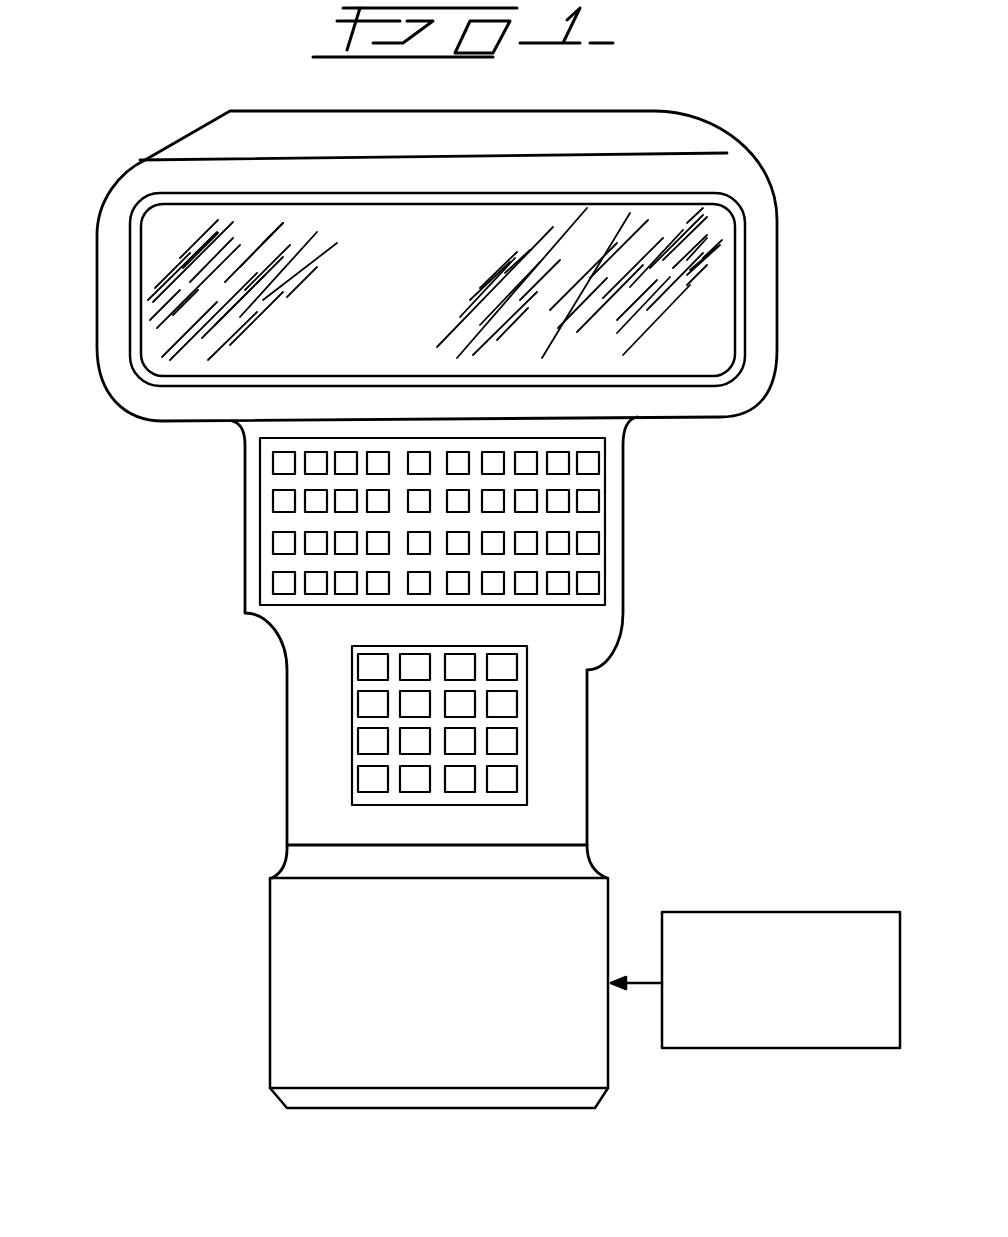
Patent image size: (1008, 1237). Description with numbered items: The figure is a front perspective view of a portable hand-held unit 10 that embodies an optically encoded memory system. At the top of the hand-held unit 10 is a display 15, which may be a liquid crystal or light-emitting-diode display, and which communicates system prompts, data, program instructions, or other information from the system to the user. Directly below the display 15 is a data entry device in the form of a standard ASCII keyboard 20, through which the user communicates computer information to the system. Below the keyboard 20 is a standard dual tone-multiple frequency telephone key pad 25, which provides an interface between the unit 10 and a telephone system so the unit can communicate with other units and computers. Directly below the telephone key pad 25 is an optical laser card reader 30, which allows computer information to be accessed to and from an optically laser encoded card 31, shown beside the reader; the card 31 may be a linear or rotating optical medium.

The portable hand-held unit 10 is at (196, 100).
The display 15 is at (160, 223).
The keyboard 20 is at (276, 493).
The telephone key pad 25 is at (360, 735).
The optical laser card reader 30 is at (290, 925).
The card 31 is at (787, 936).